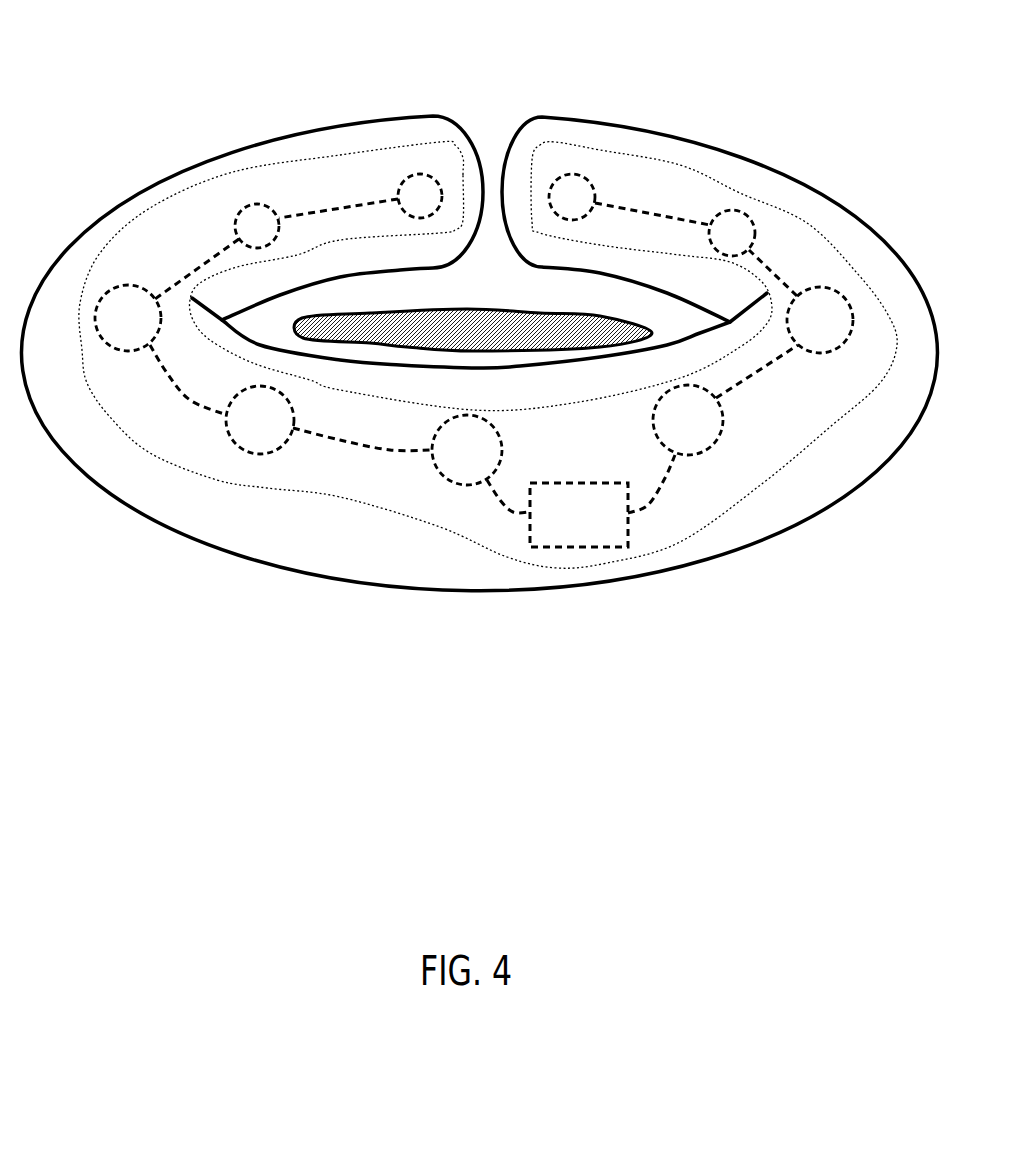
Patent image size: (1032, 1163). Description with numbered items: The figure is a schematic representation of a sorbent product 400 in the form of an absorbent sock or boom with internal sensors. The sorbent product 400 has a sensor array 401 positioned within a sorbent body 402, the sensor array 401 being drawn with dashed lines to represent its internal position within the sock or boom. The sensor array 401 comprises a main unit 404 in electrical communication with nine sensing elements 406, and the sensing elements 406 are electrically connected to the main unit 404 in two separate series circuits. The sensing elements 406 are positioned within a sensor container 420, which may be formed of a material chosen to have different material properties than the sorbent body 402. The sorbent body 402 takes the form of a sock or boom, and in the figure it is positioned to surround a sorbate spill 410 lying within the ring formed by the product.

The sorbent product 400 is at (211, 42).
The sensor array 401 is at (619, 447).
The sorbent body 402 is at (617, 127).
The main unit 404 is at (579, 515).
The sensing elements 406 is at (732, 210).
The sorbate spill 410 is at (467, 320).
The sensor container 420 is at (268, 488).